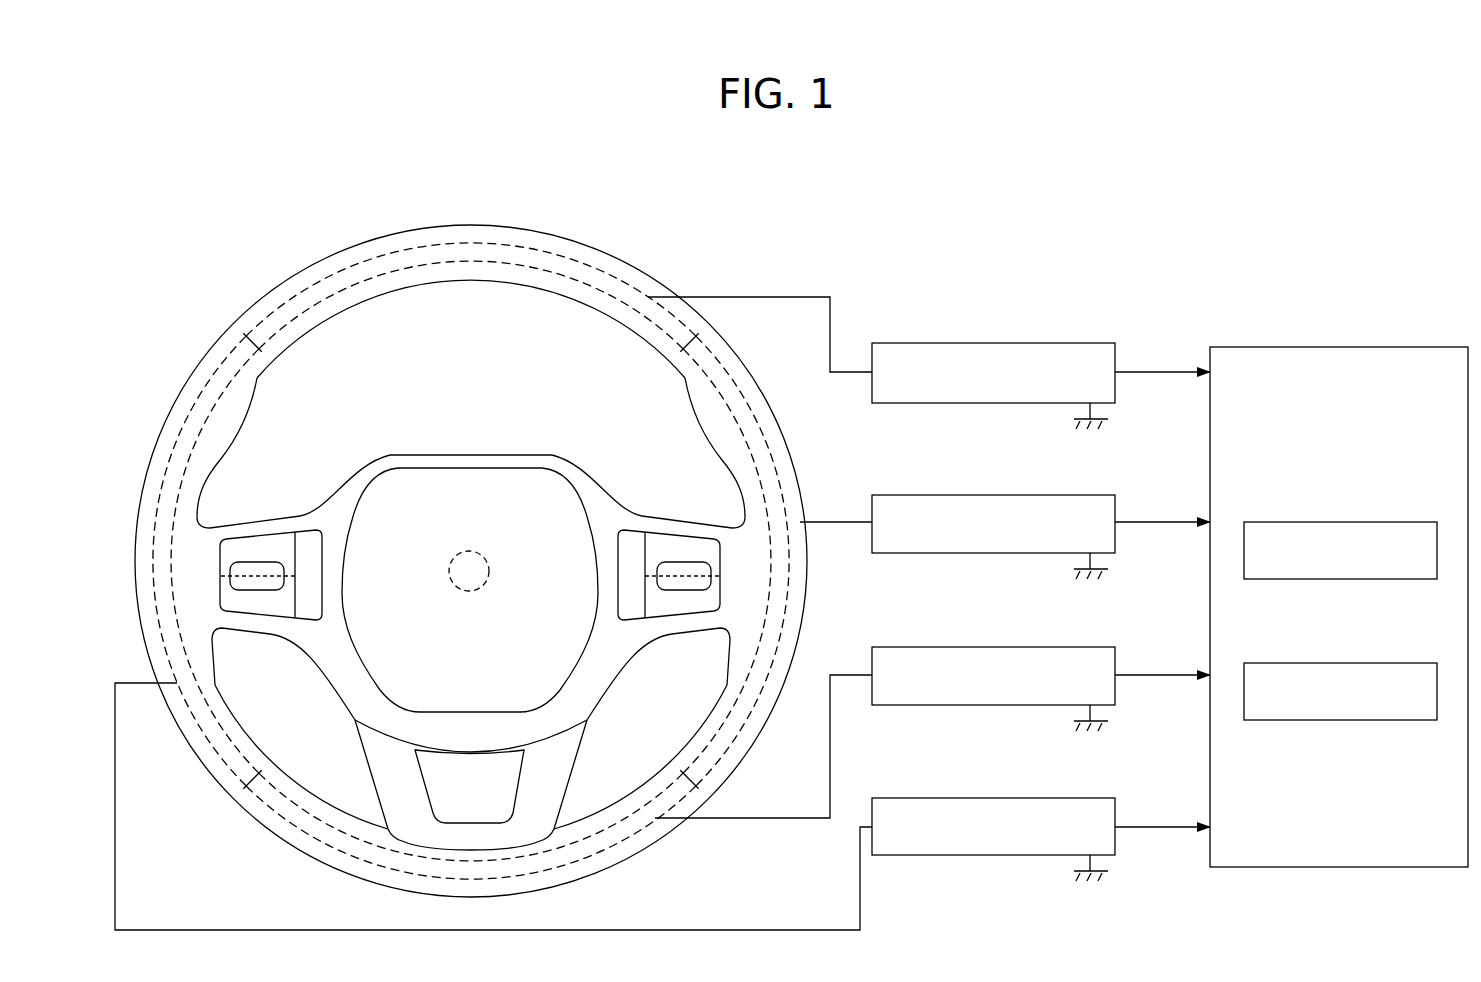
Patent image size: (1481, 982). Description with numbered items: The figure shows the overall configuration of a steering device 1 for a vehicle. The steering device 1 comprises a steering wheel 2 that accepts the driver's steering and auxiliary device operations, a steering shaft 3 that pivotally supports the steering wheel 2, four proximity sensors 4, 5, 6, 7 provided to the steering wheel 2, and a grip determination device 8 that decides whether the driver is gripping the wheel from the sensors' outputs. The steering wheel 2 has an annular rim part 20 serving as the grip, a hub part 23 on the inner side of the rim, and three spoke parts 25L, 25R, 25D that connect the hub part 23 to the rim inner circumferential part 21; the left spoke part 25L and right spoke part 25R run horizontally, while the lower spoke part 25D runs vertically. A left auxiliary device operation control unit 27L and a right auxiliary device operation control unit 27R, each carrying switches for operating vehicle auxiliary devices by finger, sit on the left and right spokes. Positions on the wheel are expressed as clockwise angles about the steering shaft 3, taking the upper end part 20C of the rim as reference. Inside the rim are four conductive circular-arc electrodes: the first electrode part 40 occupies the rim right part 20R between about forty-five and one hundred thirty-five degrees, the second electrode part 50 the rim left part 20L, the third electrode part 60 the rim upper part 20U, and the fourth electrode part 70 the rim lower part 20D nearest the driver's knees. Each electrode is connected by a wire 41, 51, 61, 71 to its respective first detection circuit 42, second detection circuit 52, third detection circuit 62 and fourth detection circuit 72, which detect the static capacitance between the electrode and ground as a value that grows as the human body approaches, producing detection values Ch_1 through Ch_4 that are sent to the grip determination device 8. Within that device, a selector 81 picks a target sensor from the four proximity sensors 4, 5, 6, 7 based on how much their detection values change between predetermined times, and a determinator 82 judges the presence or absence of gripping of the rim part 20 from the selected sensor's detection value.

The steering device 1 is at (876, 235).
The steering wheel 2 is at (594, 222).
The steering shaft 3 is at (466, 551).
The rim part 20 is at (376, 238).
The upper end part 20C is at (467, 233).
The rim upper part 20U is at (634, 270).
The rim right part 20R is at (742, 372).
The rim lower part 20D is at (650, 835).
The rim left part 20L is at (196, 375).
The rim inner circumferential part 21 is at (241, 428).
The hub part 23 is at (413, 466).
The left spoke part 25L is at (307, 518).
The right spoke part 25R is at (627, 518).
The lower spoke part 25D is at (565, 744).
The left auxiliary device operation control unit 27L is at (270, 543).
The right auxiliary device operation control unit 27R is at (665, 543).
The first proximity sensor 4 is at (1128, 478).
The second proximity sensor 5 is at (1128, 778).
The third proximity sensor 6 is at (1128, 330).
The fourth proximity sensor 7 is at (1128, 633).
The first electrode part 40 is at (742, 411).
The wire 41 is at (868, 520).
The first detection circuit 42 is at (1005, 496).
The second electrode part 50 is at (198, 408).
The wire 51 is at (780, 930).
The second detection circuit 52 is at (1005, 798).
The third electrode part 60 is at (541, 258).
The wire 61 is at (790, 297).
The third detection circuit 62 is at (1005, 344).
The fourth electrode part 70 is at (327, 833).
The wire 71 is at (862, 674).
The fourth detection circuit 72 is at (1005, 647).
The grip determination device 8 is at (1418, 347).
The selector 81 is at (1402, 522).
The determinator 82 is at (1402, 663).